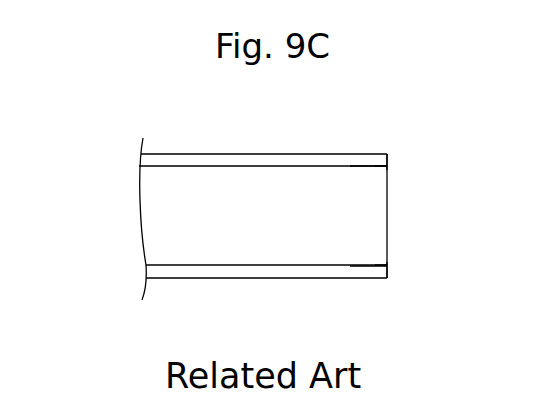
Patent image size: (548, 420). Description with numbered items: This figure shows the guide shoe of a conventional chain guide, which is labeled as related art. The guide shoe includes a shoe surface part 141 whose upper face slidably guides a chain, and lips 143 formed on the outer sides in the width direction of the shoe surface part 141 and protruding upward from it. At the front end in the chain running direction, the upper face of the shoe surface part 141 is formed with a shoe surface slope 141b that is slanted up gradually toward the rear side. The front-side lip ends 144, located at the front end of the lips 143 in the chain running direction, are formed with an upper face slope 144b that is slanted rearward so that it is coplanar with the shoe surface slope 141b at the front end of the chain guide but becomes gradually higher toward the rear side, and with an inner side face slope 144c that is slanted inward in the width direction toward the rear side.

The shoe surface part 141 is at (215, 213).
The shoe surface slope 141b is at (377, 217).
The lips 143 is at (242, 159).
The front-side lip ends 144 is at (377, 151).
The upper face slope 144b is at (368, 162).
The inner side face slope 144c is at (377, 165).